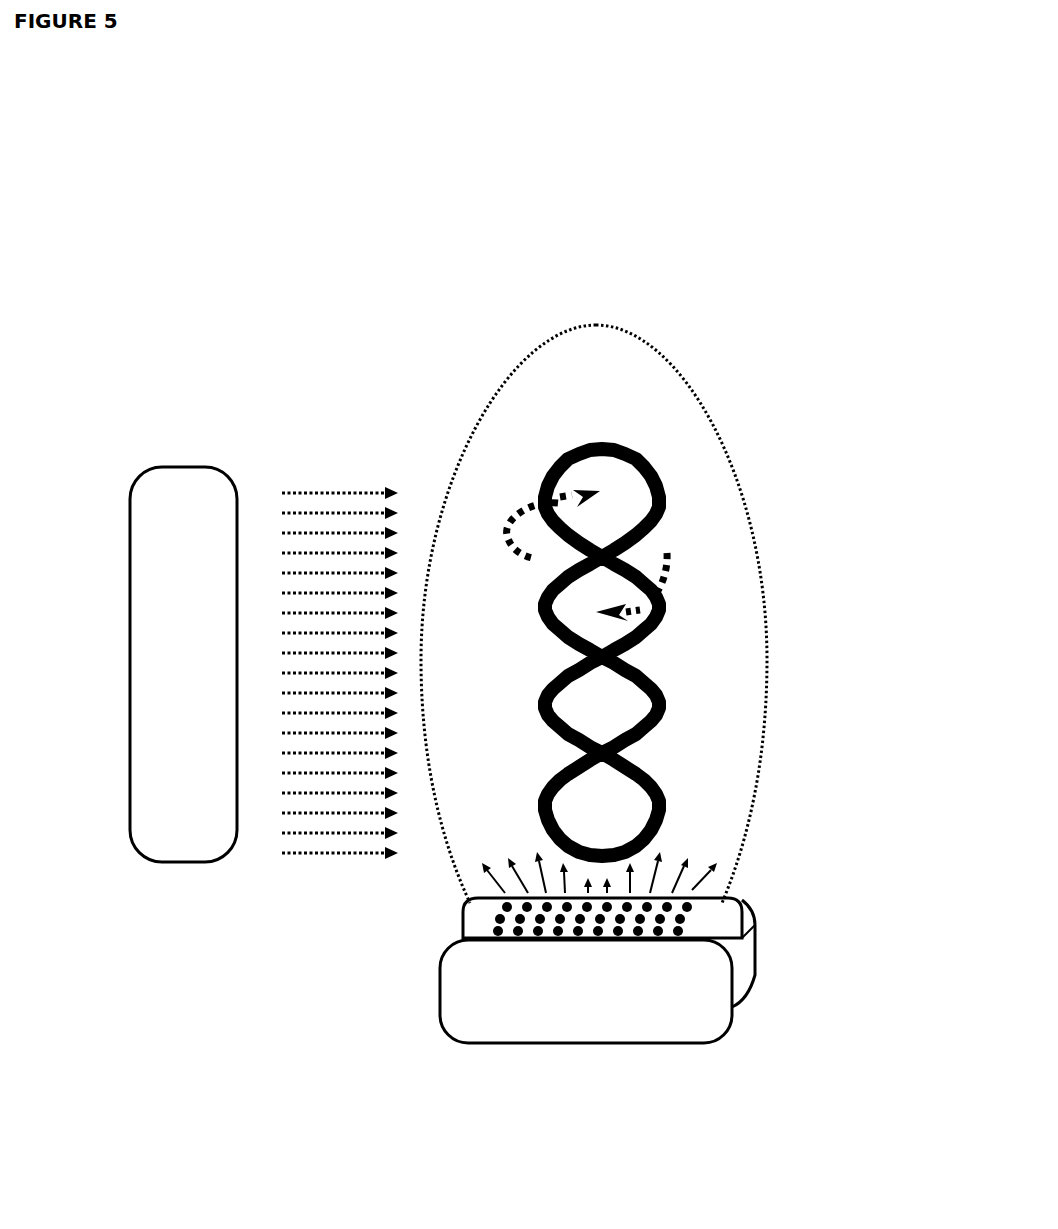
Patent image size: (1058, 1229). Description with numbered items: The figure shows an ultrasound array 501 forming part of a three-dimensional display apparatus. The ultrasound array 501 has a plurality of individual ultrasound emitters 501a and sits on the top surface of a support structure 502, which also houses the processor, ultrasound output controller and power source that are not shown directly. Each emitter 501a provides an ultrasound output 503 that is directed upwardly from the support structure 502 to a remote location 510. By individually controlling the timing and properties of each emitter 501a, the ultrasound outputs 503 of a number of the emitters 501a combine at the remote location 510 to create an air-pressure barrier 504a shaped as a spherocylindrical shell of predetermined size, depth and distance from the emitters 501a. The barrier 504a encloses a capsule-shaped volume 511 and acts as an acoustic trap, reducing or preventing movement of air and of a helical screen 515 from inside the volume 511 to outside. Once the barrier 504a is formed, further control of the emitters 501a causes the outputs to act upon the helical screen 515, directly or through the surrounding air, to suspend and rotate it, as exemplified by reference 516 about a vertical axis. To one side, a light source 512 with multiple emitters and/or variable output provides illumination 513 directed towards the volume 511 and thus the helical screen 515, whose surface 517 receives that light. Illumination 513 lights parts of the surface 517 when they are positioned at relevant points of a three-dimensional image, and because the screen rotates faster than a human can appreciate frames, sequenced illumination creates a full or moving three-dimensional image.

The ultrasound array 501 is at (582, 944).
The ultrasound emitter 501a is at (690, 930).
The support structure 502 is at (497, 1012).
The ultrasound output 503 is at (707, 878).
The air-pressure barrier 504a is at (685, 370).
The remote location 510 is at (483, 380).
The volume 511 is at (606, 396).
The light source 512 is at (158, 598).
The illumination 513 is at (315, 488).
The helical screen 515 is at (682, 510).
The suspension and rotation 516 is at (502, 533).
The helical surface 517 is at (540, 722).